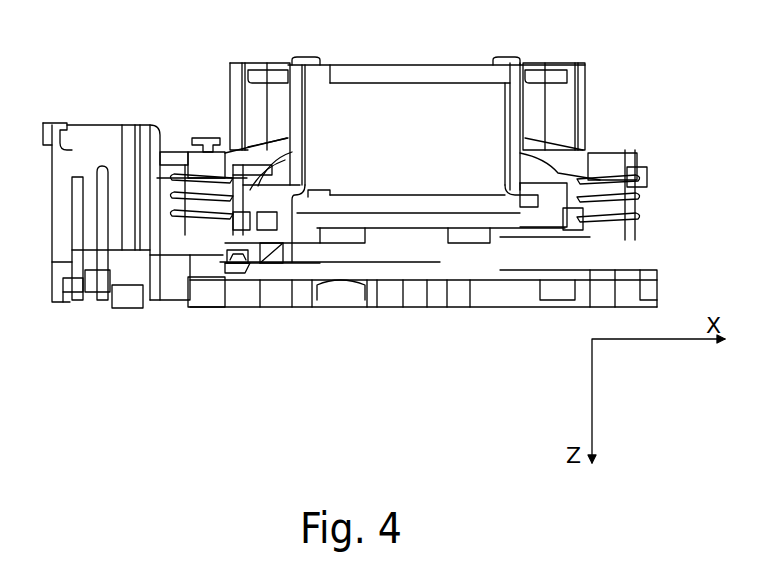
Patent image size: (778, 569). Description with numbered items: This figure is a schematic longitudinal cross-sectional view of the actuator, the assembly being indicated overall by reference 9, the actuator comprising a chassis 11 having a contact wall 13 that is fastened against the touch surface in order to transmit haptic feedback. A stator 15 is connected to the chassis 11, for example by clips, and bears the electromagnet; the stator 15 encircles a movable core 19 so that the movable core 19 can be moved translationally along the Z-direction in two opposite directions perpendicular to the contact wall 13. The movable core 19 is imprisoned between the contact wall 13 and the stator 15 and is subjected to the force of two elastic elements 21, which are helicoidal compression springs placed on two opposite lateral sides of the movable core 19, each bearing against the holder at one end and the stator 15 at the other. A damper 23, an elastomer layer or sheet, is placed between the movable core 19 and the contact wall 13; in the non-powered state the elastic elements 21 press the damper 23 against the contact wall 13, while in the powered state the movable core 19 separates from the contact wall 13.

The connector assembly 9 is at (213, 56).
The chassis 11 is at (128, 235).
The contact wall 13 is at (452, 300).
The stator 15 is at (563, 92).
The movable core 19 is at (373, 111).
The elastic elements 21 is at (200, 178).
The damper 23 is at (440, 255).